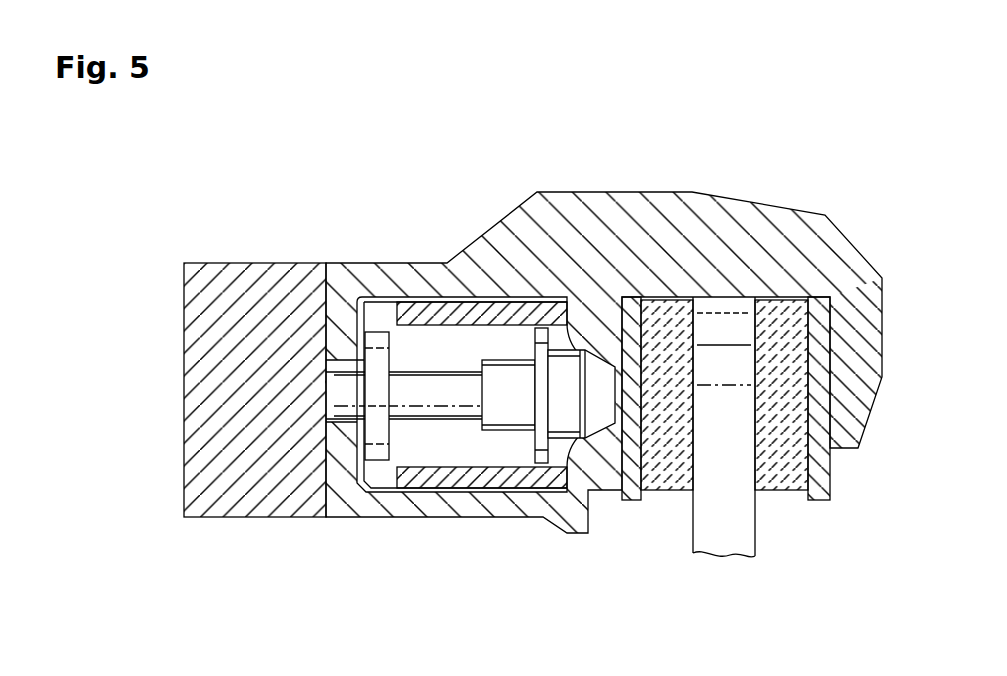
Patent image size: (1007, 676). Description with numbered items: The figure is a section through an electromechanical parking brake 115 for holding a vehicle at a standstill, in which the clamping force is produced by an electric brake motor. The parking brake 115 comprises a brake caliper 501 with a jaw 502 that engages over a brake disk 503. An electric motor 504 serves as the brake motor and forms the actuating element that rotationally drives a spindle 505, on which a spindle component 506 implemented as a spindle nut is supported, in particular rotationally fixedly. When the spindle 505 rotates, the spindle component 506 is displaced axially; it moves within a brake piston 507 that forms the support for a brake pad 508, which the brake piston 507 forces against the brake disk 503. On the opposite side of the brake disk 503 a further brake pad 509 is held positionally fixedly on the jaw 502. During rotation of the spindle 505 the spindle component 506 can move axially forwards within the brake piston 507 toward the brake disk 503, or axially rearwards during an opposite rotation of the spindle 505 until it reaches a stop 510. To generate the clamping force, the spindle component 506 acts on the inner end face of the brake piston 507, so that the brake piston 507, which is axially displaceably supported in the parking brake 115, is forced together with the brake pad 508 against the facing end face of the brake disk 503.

The electromechanical parking brake 115 is at (824, 181).
The brake caliper 501 is at (625, 205).
The jaw 502 is at (863, 332).
The brake disk 503 is at (727, 510).
The electric motor 504 is at (215, 261).
The spindle 505 is at (442, 403).
The spindle component 506 is at (520, 380).
The brake piston 507 is at (415, 315).
The brake pad 508 is at (660, 465).
The further brake pad 509 is at (784, 460).
The stop 510 is at (376, 340).